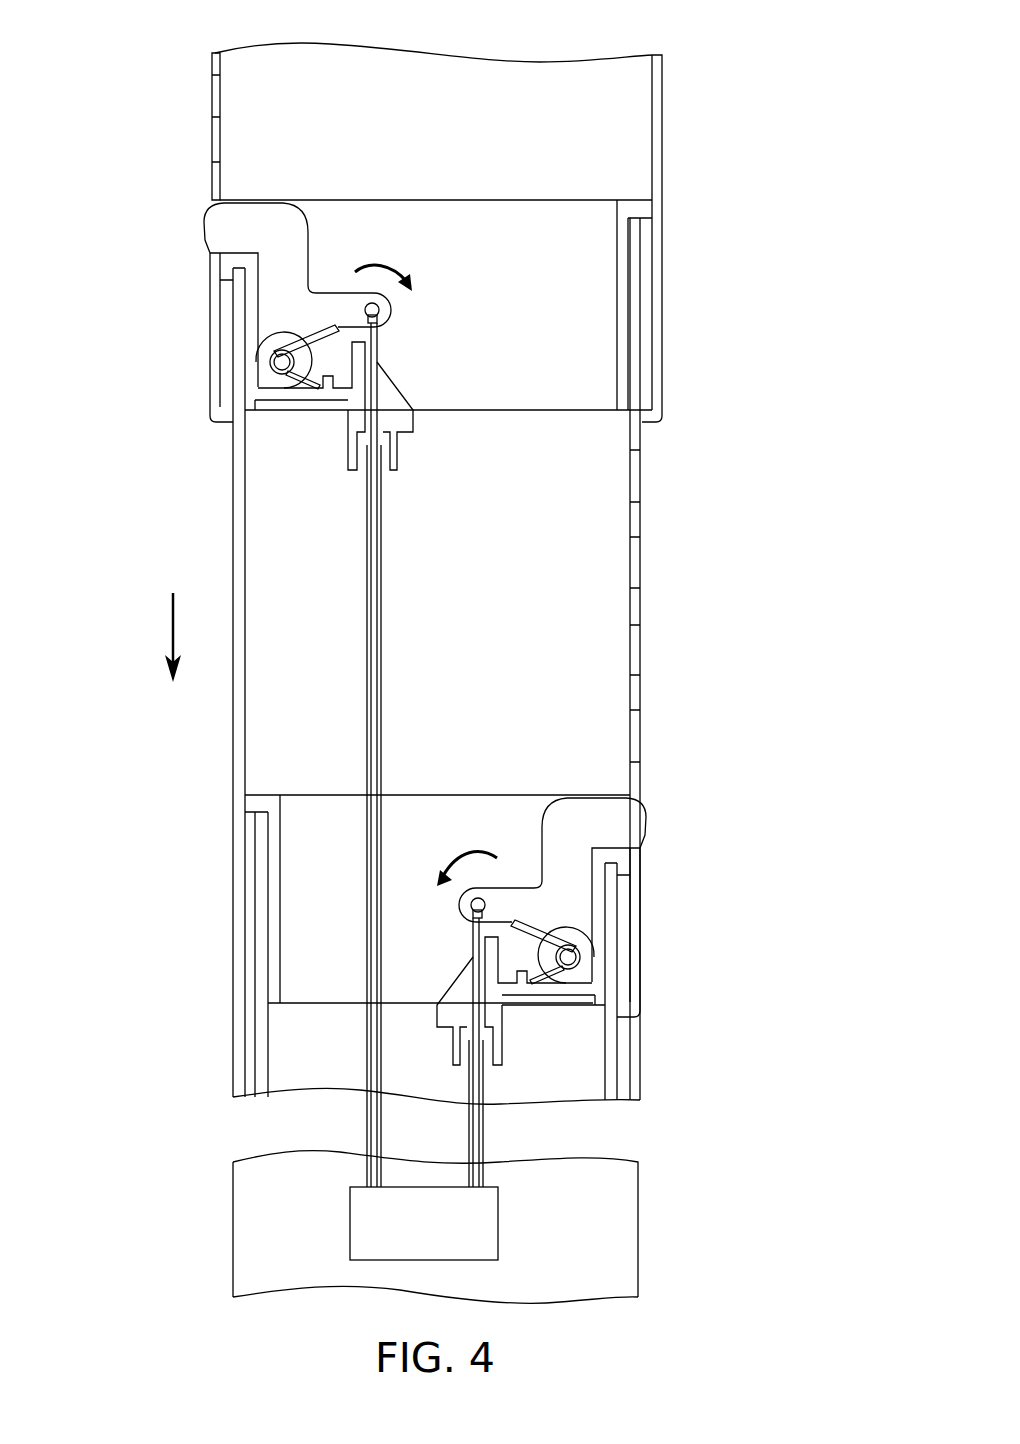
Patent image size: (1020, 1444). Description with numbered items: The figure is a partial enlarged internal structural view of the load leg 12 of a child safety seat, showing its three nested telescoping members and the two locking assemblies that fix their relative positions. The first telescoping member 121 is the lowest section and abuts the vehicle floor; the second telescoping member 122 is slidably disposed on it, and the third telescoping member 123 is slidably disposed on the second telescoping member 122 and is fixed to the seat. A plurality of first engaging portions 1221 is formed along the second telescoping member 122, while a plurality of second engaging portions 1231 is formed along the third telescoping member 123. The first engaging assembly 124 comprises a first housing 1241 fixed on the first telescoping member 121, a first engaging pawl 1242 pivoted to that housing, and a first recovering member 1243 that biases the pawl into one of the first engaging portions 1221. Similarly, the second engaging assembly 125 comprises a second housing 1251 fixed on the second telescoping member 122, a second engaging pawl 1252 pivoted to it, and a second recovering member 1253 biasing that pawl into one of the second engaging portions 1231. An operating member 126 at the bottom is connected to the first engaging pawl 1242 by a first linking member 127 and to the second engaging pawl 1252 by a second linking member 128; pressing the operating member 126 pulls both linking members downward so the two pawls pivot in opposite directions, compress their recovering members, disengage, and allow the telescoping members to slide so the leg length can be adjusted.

The load leg 12 is at (731, 76).
The first telescoping member 121 is at (612, 1076).
The second telescoping member 122 is at (237, 740).
The first engaging portions 1221 is at (663, 653).
The third telescoping member 123 is at (662, 238).
The second engaging portions 1231 is at (197, 133).
The first engaging assembly 124 is at (735, 835).
The first housing 1241 is at (590, 990).
The first engaging pawl 1242 is at (613, 830).
The first recovering member 1243 is at (565, 928).
The second engaging assembly 125 is at (125, 233).
The second housing 1251 is at (270, 398).
The second engaging pawl 1252 is at (220, 232).
The second recovering member 1253 is at (280, 348).
The operating member 126 is at (372, 1218).
The first linking member 127 is at (478, 1180).
The second linking member 128 is at (370, 540).